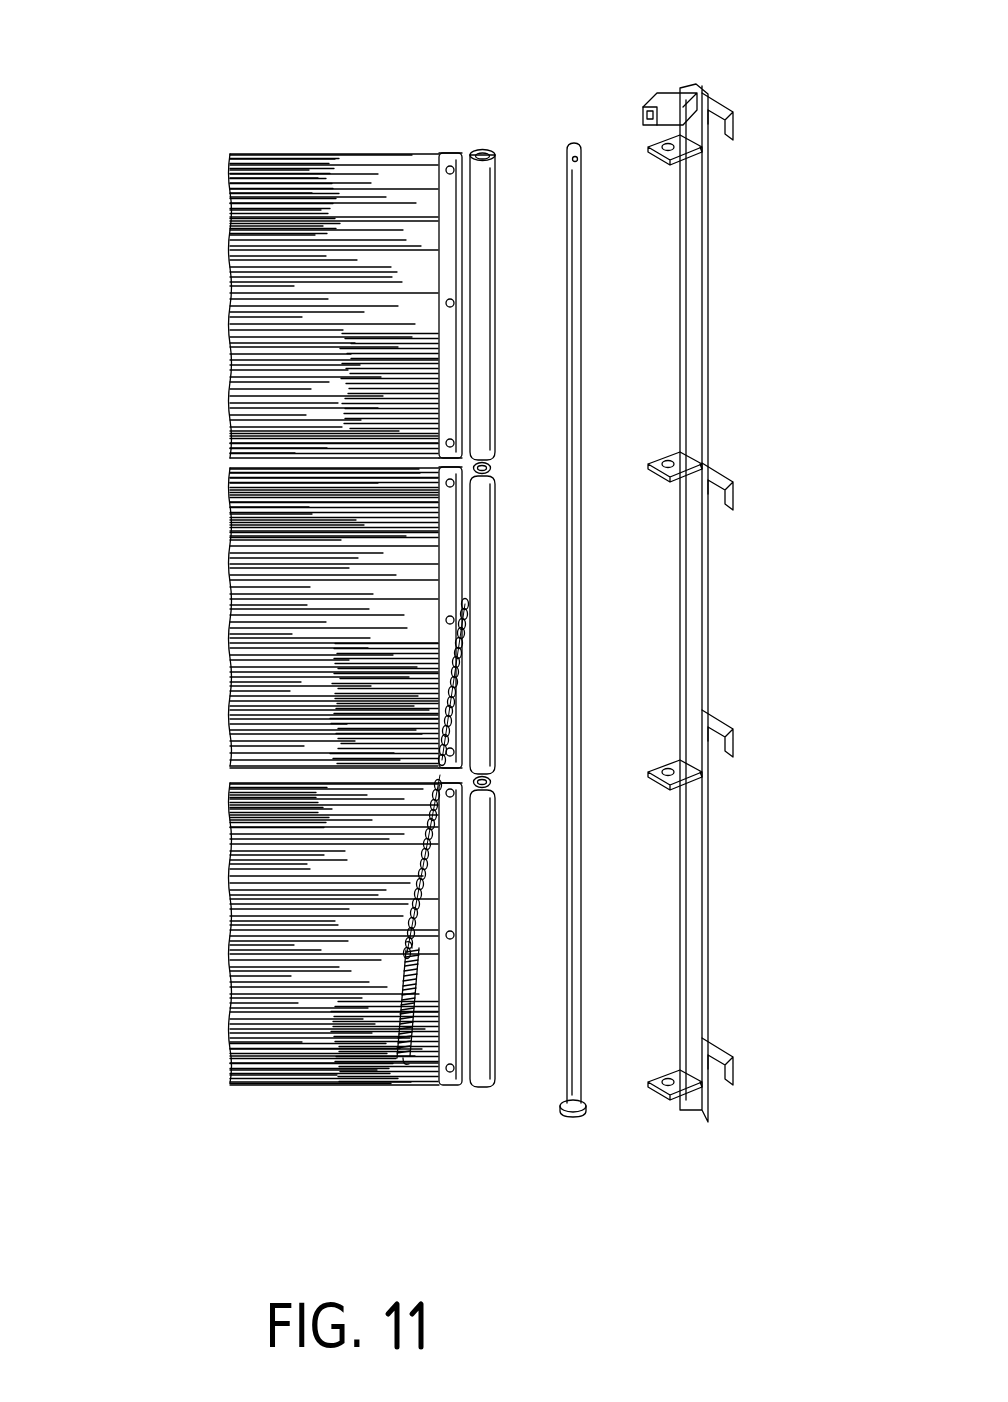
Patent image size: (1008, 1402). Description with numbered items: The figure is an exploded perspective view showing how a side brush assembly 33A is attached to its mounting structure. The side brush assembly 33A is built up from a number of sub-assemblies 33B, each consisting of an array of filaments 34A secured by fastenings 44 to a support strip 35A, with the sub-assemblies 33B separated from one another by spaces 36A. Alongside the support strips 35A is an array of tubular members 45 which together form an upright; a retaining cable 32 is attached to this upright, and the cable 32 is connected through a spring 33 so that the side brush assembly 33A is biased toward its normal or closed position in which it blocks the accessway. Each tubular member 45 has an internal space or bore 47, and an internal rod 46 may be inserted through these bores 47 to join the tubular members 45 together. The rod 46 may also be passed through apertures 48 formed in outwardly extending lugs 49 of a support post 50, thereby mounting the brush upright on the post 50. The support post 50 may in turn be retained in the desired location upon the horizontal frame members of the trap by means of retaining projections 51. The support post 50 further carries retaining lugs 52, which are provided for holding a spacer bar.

The retaining cable 32 is at (435, 877).
The spring 33 is at (403, 1045).
The side brush assembly 33A is at (463, 140).
The sub-assembly 33B is at (205, 598).
The array of filaments 34A is at (230, 254).
The support strip 35A is at (448, 230).
The space 36A is at (247, 463).
The fastening 44 is at (454, 303).
The tubular member 45 is at (485, 390).
The internal rod 46 is at (572, 1083).
The bore 47 is at (491, 468).
The aperture 48 is at (660, 148).
The outwardly extending lug 49 is at (700, 150).
The support post 50 is at (708, 930).
The retaining projection 51 is at (720, 100).
The retaining lug 52 is at (663, 100).